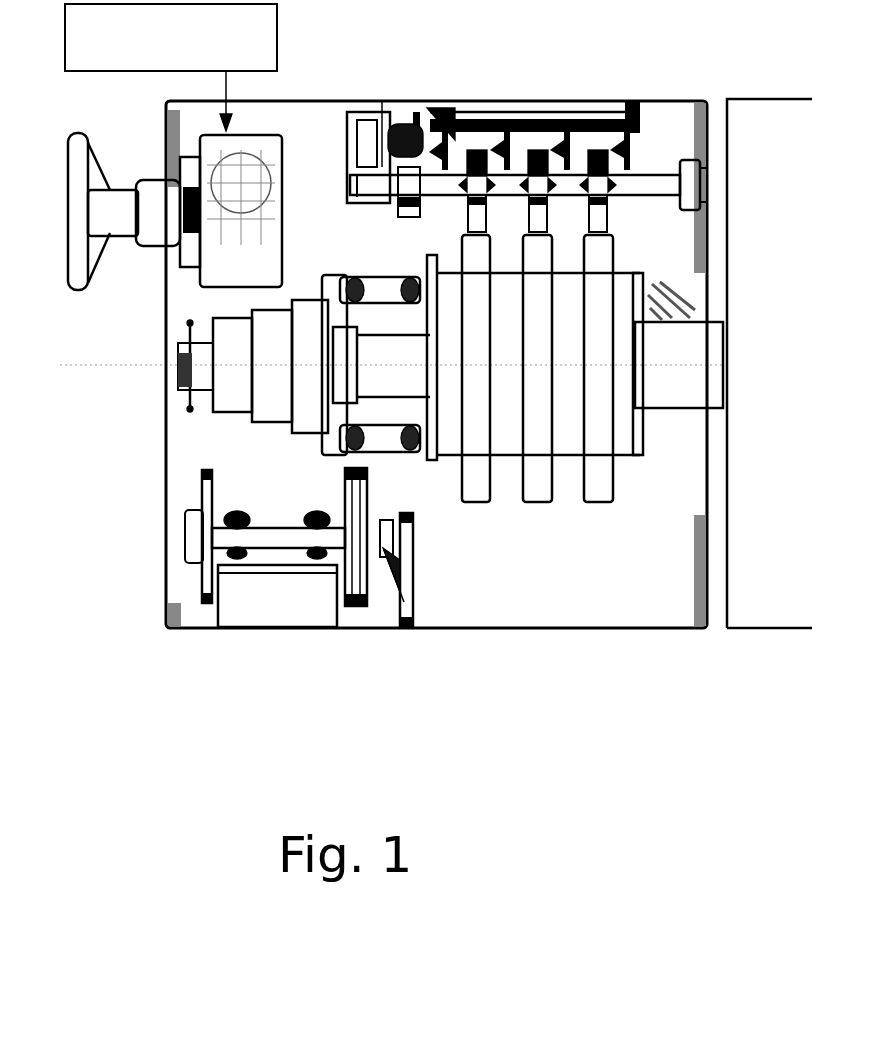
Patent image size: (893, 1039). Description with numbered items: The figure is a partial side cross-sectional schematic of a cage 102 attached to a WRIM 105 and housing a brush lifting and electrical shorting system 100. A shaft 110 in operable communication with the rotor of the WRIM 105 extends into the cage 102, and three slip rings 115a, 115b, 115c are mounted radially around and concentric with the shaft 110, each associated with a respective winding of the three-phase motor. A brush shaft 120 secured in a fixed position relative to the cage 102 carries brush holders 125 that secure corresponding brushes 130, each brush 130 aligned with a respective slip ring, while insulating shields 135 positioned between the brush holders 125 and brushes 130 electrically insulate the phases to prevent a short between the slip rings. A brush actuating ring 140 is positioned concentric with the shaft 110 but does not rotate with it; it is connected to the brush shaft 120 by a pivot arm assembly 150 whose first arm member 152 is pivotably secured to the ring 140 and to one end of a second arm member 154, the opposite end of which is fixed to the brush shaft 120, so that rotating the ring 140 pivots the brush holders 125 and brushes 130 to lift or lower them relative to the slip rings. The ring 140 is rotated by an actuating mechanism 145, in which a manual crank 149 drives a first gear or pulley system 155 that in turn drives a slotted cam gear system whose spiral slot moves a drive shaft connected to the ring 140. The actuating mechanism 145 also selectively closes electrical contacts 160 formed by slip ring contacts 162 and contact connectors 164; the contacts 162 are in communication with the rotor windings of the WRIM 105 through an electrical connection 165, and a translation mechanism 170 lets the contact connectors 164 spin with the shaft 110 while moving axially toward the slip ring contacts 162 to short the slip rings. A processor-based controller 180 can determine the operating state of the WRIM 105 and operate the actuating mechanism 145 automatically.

The brush lifting and electrical shorting system 100 is at (95, 490).
The cage 102 is at (163, 553).
The WRIM 105 is at (769, 363).
The shaft 110 is at (676, 392).
The slip ring 115a is at (478, 490).
The slip ring 115b is at (540, 490).
The slip ring 115c is at (598, 490).
The brush shaft 120 is at (660, 186).
The brush holder 125 is at (468, 186).
The brush 130 is at (486, 200).
The insulating shield 135 is at (470, 120).
The brush actuating ring 140 is at (382, 100).
The actuating mechanism 145 is at (343, 635).
The manual crank 149 is at (116, 248).
The pivot arm assembly 150 is at (333, 105).
The first arm member 152 is at (381, 108).
The second arm member 154 is at (350, 172).
The first gear or pulley system 155 is at (166, 398).
The electrical contacts 160 is at (410, 275).
The slip ring contact 162 is at (388, 305).
The contact connector 164 is at (400, 467).
The electrical connection 165 is at (633, 272).
The translation mechanism 170 is at (270, 413).
The controller 180 is at (171, 67).